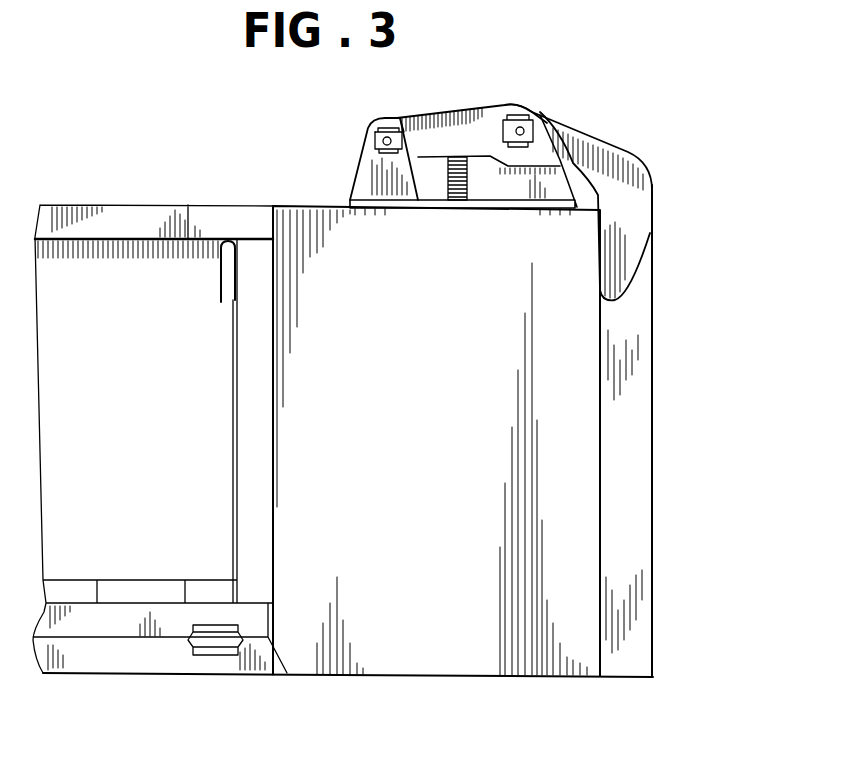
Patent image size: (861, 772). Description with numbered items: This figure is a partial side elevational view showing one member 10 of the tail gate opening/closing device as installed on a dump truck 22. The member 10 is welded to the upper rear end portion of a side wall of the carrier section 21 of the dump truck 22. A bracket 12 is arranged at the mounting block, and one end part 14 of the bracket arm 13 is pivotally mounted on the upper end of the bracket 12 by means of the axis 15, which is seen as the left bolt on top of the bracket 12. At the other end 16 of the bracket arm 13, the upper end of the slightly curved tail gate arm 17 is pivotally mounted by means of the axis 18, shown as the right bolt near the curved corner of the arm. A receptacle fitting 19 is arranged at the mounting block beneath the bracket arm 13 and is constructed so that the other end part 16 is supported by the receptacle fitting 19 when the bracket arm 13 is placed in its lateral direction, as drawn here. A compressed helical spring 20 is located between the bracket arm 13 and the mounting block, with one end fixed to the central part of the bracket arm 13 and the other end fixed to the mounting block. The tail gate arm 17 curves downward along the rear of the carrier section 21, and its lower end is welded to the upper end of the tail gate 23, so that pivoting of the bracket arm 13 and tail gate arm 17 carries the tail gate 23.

The member of the tail gate opening/closing device 10 is at (512, 90).
The bracket 12 is at (368, 173).
The bracket arm 13 is at (473, 127).
The one end part of the bracket arm 14 is at (402, 137).
The axis 15 is at (374, 137).
The other end of the bracket arm 16 is at (522, 112).
The tail gate arm 17 is at (633, 205).
The axis 18 is at (527, 129).
The receptacle fitting 19 is at (522, 187).
The compressed helical spring 20 is at (448, 182).
The carrier section 21 is at (372, 675).
The dump truck 22 is at (140, 203).
The tail gate 23 is at (638, 365).